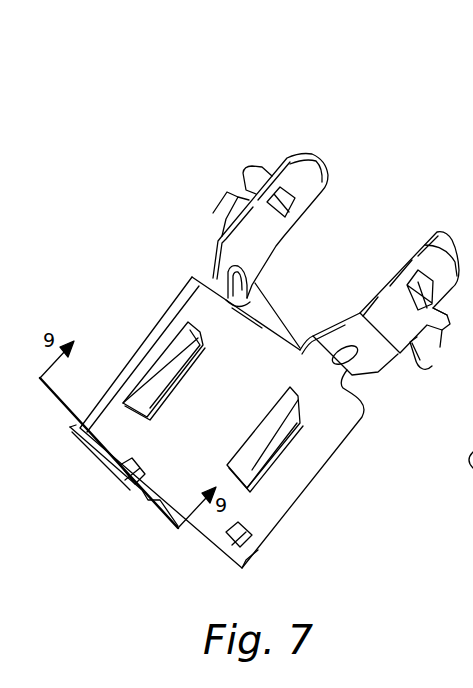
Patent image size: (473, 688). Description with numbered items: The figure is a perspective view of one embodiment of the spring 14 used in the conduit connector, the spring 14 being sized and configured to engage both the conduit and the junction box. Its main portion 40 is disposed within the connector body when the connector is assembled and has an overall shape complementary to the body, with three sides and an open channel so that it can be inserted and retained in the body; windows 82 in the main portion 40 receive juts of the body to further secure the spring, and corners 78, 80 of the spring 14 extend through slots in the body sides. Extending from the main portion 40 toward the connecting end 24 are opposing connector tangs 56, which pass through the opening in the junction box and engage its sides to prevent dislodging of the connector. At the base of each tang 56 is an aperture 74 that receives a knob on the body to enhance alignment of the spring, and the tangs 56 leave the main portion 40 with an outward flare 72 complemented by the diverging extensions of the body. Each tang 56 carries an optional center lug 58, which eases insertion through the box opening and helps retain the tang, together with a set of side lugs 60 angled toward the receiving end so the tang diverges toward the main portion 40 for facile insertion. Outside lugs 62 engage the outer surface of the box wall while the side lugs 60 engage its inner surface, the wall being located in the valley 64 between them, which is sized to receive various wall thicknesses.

The spring 14 is at (152, 294).
The connecting end 24 is at (353, 242).
The main portion 40 is at (203, 409).
The connector tang 56 is at (322, 172).
The center lug 58 is at (425, 288).
The side lug 60 is at (250, 170).
The outside lug 62 is at (412, 362).
The valley 64 is at (434, 330).
The outward flare 72 is at (378, 372).
The aperture 74 is at (238, 281).
The corner 78 is at (238, 560).
The corner 80 is at (143, 498).
The window 82 is at (120, 480).